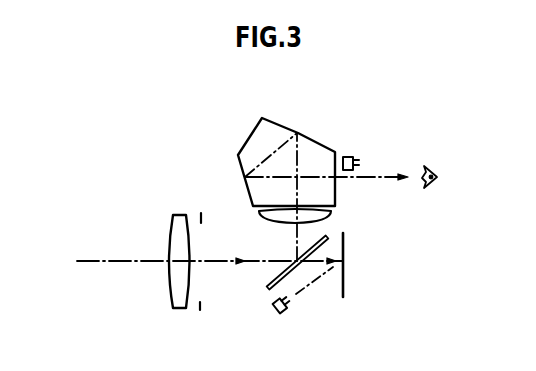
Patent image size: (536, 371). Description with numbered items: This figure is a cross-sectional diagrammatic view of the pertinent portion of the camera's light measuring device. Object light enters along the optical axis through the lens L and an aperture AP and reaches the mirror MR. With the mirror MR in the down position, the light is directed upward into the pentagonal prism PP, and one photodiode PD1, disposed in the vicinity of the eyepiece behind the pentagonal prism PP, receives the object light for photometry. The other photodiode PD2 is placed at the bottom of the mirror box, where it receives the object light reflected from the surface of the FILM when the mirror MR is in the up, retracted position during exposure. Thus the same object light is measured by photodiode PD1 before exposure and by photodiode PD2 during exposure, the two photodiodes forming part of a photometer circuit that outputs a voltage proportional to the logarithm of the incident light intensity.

The pentagonal prism PP is at (287, 127).
The photodiode PD1 is at (350, 159).
The lens L is at (172, 307).
The aperture AP is at (200, 308).
The mirror MR is at (268, 288).
The photodiode PD2 is at (288, 308).
The film FILM is at (343, 282).